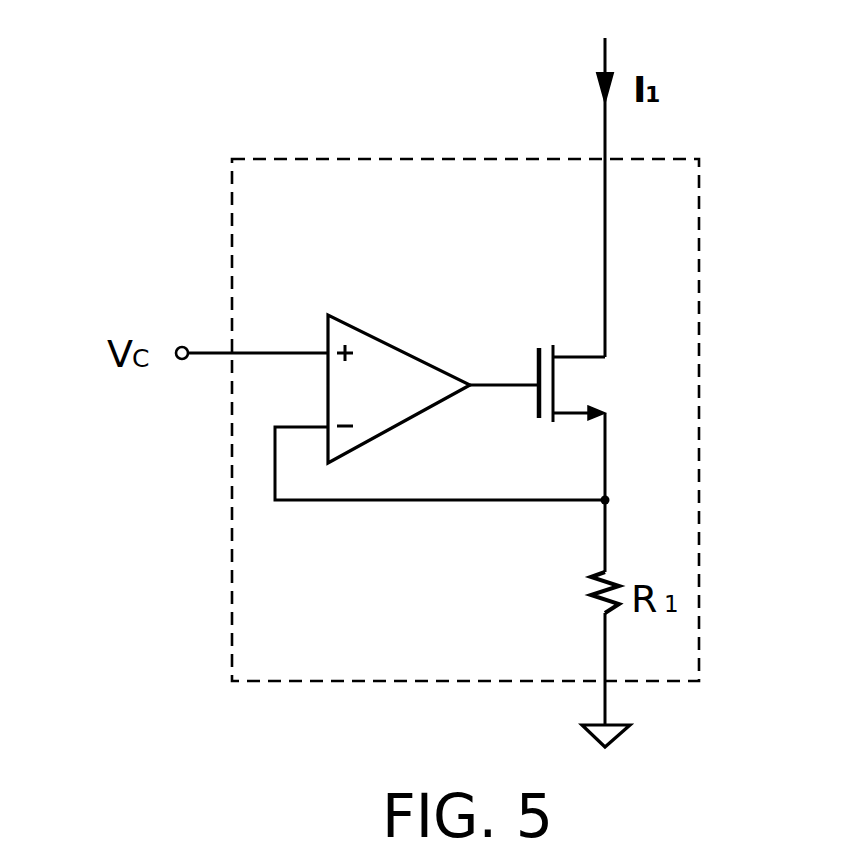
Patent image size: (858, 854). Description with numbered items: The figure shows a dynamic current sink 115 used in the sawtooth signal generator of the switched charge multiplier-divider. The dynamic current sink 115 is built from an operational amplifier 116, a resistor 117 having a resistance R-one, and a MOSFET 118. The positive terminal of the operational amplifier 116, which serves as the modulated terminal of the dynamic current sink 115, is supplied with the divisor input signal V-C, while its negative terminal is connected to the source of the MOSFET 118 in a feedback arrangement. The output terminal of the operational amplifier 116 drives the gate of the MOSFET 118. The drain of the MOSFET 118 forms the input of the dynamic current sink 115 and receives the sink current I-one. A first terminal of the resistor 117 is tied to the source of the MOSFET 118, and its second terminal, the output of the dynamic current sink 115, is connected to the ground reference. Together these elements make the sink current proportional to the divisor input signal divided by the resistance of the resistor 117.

The dynamic current sink 115 is at (705, 188).
The operational amplifier 116 is at (363, 322).
The resistor 117 is at (585, 597).
The MOSFET 118 is at (540, 340).